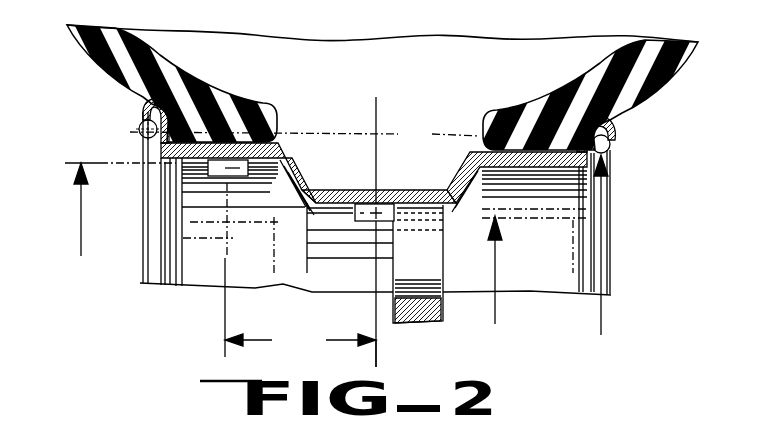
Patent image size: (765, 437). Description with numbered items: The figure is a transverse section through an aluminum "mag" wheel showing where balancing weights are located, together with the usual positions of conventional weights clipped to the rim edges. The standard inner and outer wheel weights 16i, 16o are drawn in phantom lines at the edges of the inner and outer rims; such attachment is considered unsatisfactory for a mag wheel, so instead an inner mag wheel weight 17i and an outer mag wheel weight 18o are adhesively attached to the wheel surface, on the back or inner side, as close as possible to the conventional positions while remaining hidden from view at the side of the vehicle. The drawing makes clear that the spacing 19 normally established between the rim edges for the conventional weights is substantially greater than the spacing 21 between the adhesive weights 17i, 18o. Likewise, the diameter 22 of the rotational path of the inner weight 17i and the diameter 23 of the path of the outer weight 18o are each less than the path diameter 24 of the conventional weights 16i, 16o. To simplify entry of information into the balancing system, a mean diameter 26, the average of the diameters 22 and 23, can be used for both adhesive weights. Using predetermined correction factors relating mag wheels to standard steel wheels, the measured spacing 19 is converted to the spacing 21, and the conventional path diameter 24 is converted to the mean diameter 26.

The standard inner wheel weight 16i is at (139, 131).
The standard outer wheel weight 16o is at (613, 143).
The inner mag wheel weight 17i is at (213, 178).
The outer mag wheel weight 18o is at (360, 221).
The spacing 19 is at (305, 136).
The spacing 21 is at (300, 312).
The diameter 22 is at (119, 225).
The diameter 23 is at (495, 285).
The path diameter 24 is at (598, 259).
The mean diameter 26 is at (352, 188).